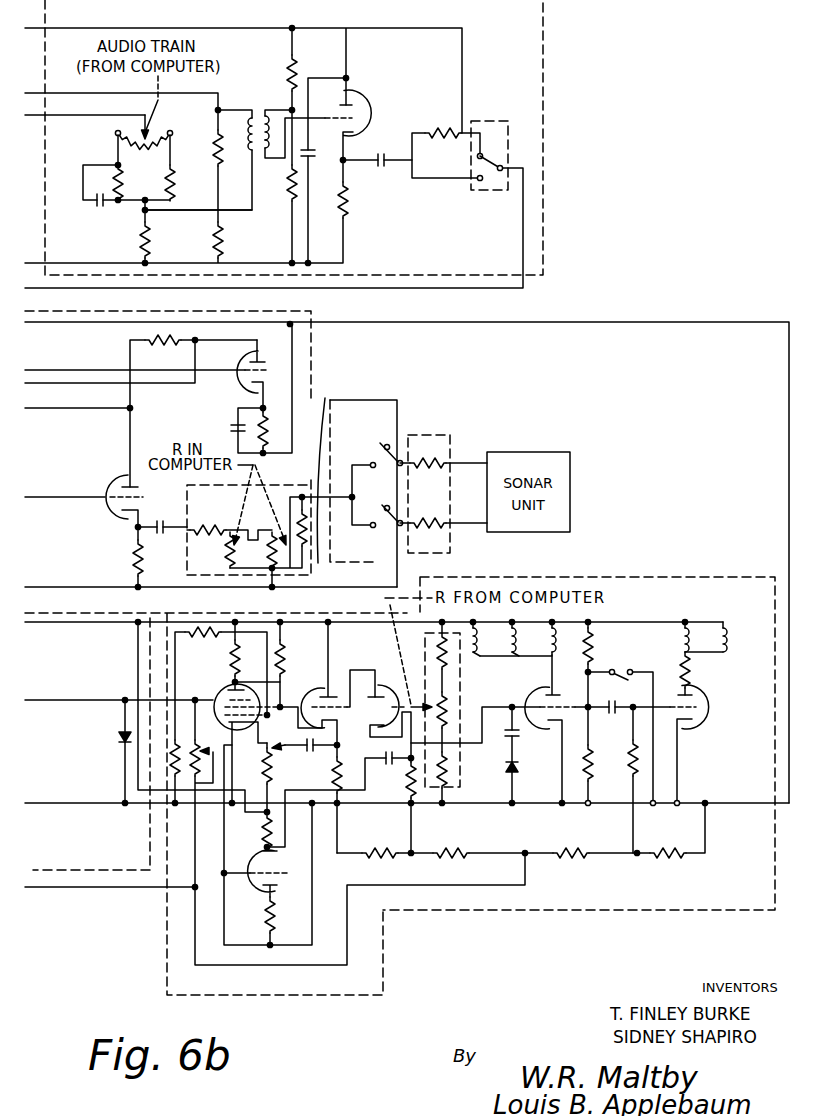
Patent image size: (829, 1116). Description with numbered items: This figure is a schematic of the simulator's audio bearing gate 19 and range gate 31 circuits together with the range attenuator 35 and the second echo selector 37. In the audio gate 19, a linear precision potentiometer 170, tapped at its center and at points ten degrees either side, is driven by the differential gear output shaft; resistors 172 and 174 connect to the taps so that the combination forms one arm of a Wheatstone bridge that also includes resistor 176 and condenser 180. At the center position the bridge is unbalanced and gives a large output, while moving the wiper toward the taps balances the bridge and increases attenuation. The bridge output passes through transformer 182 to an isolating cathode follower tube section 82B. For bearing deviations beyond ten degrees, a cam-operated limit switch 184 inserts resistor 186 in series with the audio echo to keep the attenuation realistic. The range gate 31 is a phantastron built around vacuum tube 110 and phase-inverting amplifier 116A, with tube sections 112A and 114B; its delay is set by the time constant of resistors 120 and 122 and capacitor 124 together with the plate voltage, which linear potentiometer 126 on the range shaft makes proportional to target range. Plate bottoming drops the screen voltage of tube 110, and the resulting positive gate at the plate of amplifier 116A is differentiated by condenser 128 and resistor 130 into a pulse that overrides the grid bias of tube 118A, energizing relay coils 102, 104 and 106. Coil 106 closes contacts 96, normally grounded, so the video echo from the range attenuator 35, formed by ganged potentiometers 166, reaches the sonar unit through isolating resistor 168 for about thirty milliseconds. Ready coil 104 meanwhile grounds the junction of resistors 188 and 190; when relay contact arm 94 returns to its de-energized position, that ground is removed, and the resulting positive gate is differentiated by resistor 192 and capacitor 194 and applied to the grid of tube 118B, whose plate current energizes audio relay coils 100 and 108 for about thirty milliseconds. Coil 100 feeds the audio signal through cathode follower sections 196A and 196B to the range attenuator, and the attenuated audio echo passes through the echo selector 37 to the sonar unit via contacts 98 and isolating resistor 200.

The linear precision potentiometer 170 is at (153, 134).
The resistor 172 is at (121, 176).
The resistor 174 is at (172, 184).
The condensor 180 is at (96, 206).
The transformer 182 is at (254, 152).
The isolating cathode follower tube section 82B is at (363, 101).
The resistor 186 is at (441, 128).
The limit switch 184 is at (488, 191).
The audio gate 19 is at (543, 65).
The cathode follower tube section 196B is at (232, 387).
The cathode follower tube section 196A is at (110, 482).
The range attenuator 35 is at (375, 475).
The second echo selector 37 is at (398, 413).
The relay contacts 96 is at (380, 446).
The relay contacts 98 is at (384, 527).
The isolating resistor 200 is at (446, 527).
The resistor 168 is at (448, 490).
The ganged potentiometers 166 is at (328, 568).
The vacuum tube 110 is at (222, 693).
The resistor 120 is at (260, 777).
The capacitor 124 is at (308, 750).
The resistor 176 is at (280, 782).
The resistor 122 is at (286, 651).
The vacuum tube 112A is at (314, 697).
The vacuum tube 114B is at (390, 672).
The linear potentiometer 126 is at (455, 694).
The condensor 128 is at (387, 765).
The resistor 130 is at (408, 797).
The vacuum tube 118A is at (549, 729).
The relay coil 102 is at (486, 650).
The ready coil 104 is at (527, 650).
The relay coil 106 is at (556, 624).
The audio relay coil 100 is at (688, 627).
The audio relay coil 108 is at (725, 636).
The vacuum tube 118B is at (707, 708).
The resistor 188 is at (594, 647).
The relay contact arm 94 is at (622, 667).
The capacitor 194 is at (614, 714).
The resistor 190 is at (606, 756).
The resistor 192 is at (632, 774).
The phase inverting amplifier 116A is at (262, 860).
The range gate circuit 31 is at (167, 911).